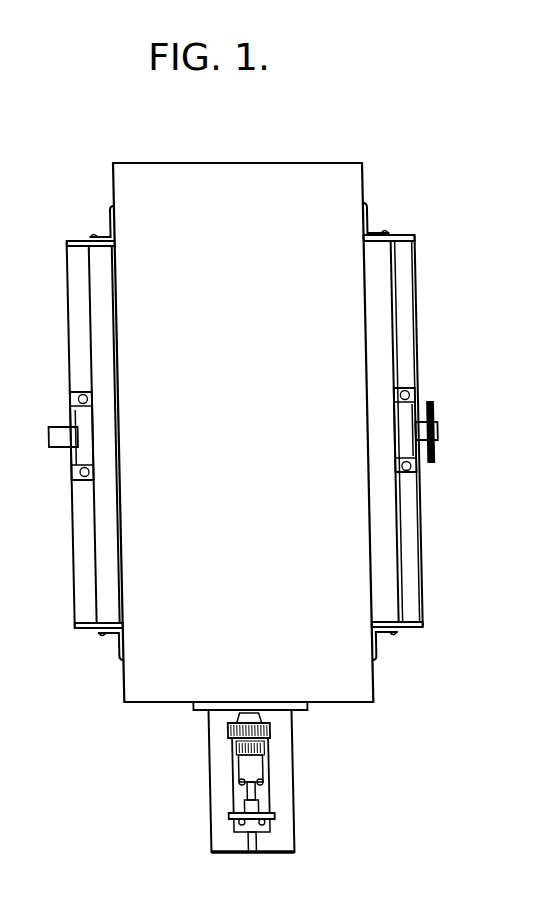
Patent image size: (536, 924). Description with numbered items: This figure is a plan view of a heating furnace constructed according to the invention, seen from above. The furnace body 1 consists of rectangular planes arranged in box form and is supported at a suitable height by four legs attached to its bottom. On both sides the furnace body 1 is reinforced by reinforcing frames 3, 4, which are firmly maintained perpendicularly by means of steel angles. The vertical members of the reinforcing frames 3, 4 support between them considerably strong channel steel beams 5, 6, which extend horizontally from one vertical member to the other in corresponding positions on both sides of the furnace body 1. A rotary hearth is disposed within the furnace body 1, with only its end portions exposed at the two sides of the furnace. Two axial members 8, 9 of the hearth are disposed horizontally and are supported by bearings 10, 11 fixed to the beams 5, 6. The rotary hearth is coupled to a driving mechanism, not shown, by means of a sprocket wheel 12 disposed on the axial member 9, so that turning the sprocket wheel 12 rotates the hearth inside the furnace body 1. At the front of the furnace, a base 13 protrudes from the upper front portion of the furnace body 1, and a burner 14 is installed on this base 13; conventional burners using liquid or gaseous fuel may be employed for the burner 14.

The furnace body 1 is at (160, 205).
The reinforcing frame 3 is at (98, 238).
The reinforcing frame 4 is at (376, 236).
The channel steel beam 5 is at (73, 318).
The channel steel beam 6 is at (405, 550).
The axial member 8 is at (56, 432).
The axial member 9 is at (431, 432).
The bearing 10 is at (79, 452).
The bearing 11 is at (400, 412).
The sprocket wheel 12 is at (424, 455).
The base 13 is at (205, 783).
The burner 14 is at (240, 767).